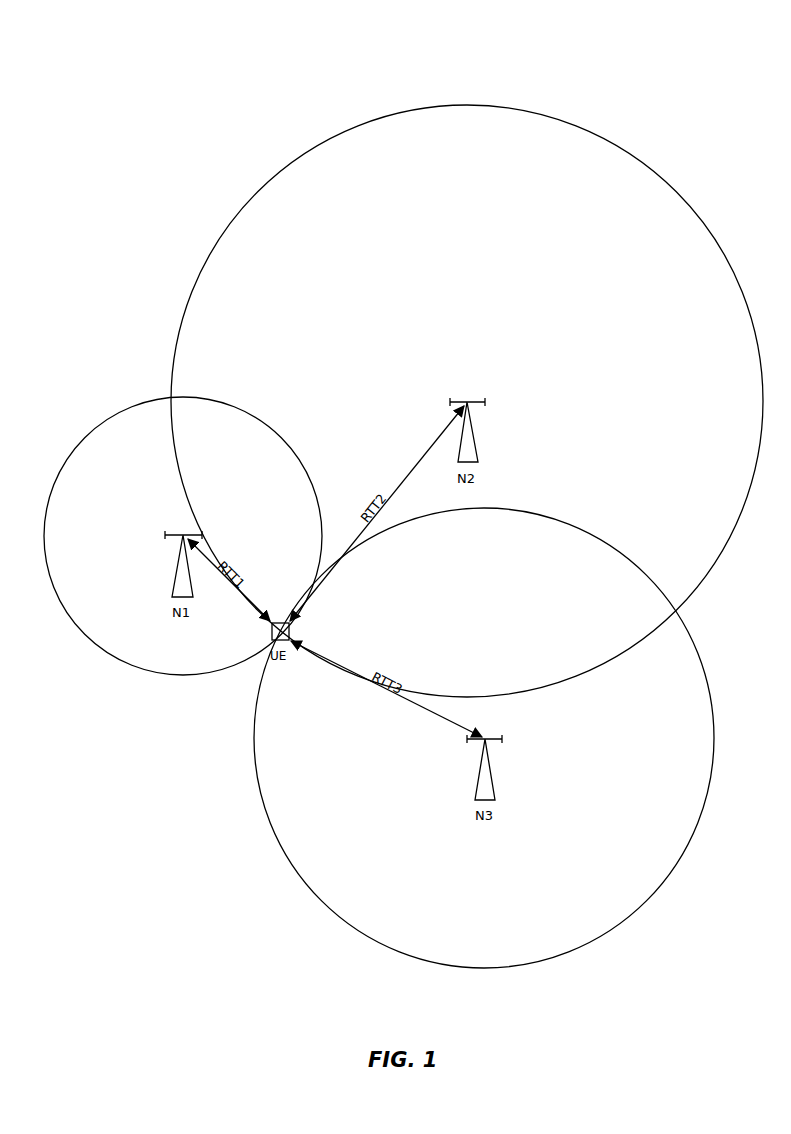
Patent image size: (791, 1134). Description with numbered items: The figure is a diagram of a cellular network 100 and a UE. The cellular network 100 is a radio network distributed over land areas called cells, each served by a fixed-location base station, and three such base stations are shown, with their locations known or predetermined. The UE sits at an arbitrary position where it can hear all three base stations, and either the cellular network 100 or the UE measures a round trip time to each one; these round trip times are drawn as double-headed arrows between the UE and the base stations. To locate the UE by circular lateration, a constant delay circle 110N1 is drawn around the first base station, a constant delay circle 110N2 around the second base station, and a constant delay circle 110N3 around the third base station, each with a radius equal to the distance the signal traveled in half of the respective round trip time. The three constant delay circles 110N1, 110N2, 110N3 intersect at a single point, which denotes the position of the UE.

The cellular network 100 is at (88, 96).
The constant delay circle 110N1 is at (103, 420).
The constant delay circle 110N2 is at (323, 142).
The constant delay circle 110N3 is at (637, 908).